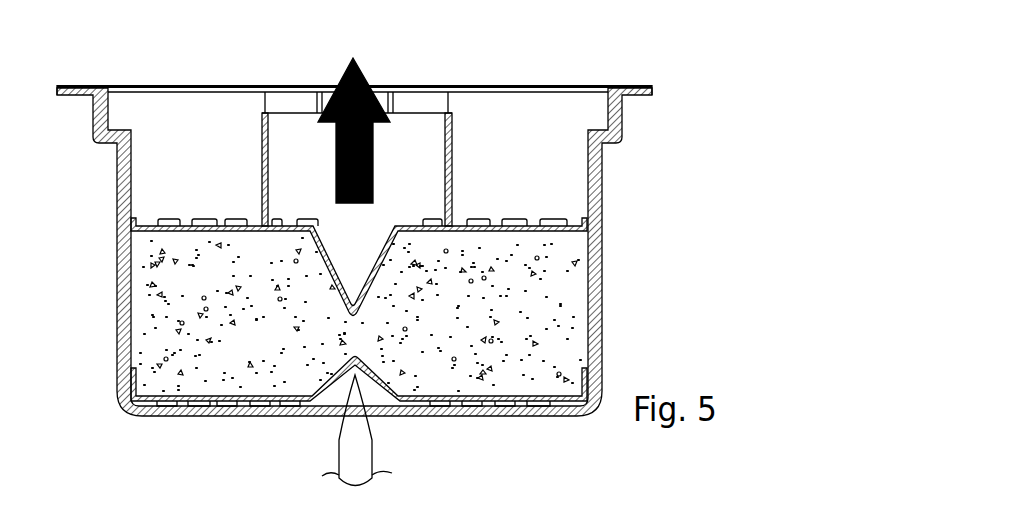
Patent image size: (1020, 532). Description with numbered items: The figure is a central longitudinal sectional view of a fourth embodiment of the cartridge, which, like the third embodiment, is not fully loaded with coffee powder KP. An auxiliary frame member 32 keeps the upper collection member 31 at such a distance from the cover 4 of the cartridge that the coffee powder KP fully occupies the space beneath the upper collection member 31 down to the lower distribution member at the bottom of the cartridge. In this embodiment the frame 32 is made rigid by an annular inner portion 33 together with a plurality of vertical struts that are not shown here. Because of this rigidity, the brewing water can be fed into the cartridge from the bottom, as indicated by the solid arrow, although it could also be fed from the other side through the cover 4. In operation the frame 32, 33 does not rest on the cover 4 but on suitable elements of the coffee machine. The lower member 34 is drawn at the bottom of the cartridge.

The cover 4 is at (495, 86).
The auxiliary frame member 32 is at (131, 145).
The annular inner portion 33 is at (453, 143).
The upper collection member 31 is at (497, 221).
The coffee powder KP is at (547, 280).
The lower support tray 34 is at (515, 399).